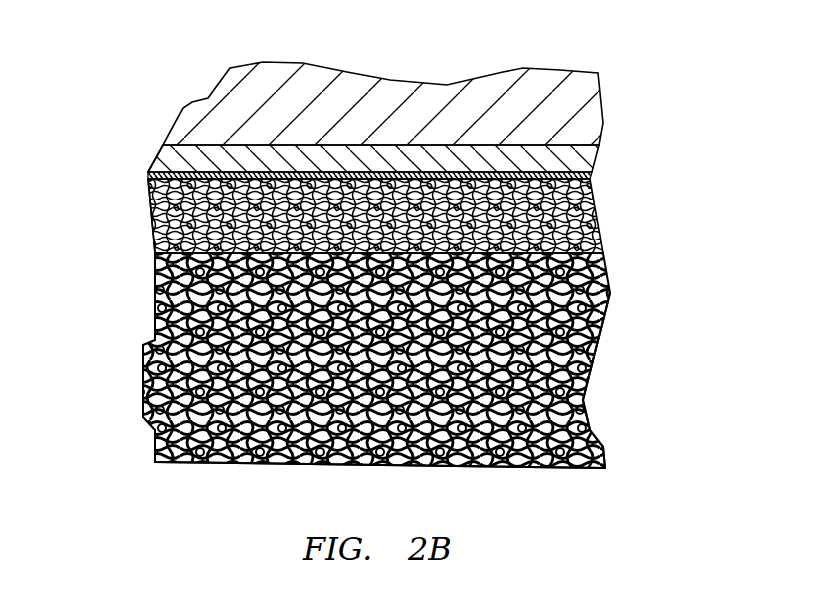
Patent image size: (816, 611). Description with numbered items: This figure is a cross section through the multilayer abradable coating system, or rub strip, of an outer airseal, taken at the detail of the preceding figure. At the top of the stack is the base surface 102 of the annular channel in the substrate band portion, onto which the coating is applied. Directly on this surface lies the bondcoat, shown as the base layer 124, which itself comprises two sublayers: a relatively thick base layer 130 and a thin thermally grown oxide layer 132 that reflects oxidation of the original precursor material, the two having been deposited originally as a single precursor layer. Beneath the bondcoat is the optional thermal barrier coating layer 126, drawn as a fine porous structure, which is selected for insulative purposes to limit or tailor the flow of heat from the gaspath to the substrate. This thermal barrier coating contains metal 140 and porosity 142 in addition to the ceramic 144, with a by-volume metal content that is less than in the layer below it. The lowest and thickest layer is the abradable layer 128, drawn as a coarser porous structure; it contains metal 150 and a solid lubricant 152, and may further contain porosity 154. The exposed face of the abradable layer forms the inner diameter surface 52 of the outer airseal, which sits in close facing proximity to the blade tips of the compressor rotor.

The base surface 102 is at (393, 173).
The base layer 124 is at (600, 162).
The base layer 130 is at (588, 168).
The thermally grown oxide layer 132 is at (586, 185).
The thermal barrier coating layer 126 is at (610, 227).
The metal 140 is at (150, 213).
The porosity 142 is at (603, 252).
The ceramic 144 is at (150, 247).
The abradable layer 128 is at (607, 343).
The metal 150 is at (588, 407).
The solid lubricant 152 is at (588, 375).
The porosity 154 is at (594, 424).
The inner diameter surface 52 is at (592, 472).